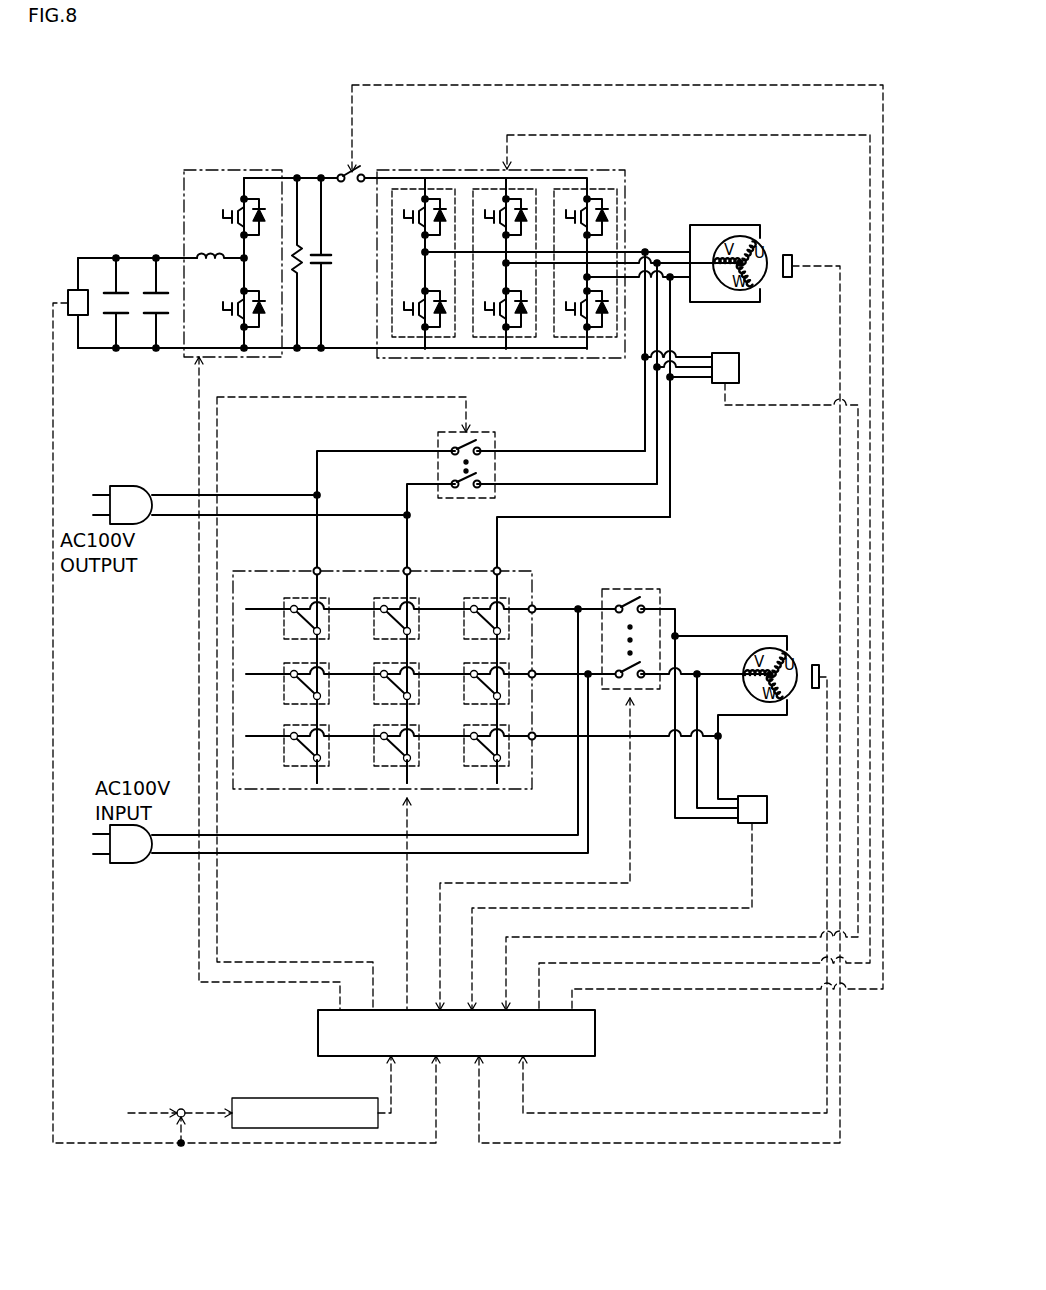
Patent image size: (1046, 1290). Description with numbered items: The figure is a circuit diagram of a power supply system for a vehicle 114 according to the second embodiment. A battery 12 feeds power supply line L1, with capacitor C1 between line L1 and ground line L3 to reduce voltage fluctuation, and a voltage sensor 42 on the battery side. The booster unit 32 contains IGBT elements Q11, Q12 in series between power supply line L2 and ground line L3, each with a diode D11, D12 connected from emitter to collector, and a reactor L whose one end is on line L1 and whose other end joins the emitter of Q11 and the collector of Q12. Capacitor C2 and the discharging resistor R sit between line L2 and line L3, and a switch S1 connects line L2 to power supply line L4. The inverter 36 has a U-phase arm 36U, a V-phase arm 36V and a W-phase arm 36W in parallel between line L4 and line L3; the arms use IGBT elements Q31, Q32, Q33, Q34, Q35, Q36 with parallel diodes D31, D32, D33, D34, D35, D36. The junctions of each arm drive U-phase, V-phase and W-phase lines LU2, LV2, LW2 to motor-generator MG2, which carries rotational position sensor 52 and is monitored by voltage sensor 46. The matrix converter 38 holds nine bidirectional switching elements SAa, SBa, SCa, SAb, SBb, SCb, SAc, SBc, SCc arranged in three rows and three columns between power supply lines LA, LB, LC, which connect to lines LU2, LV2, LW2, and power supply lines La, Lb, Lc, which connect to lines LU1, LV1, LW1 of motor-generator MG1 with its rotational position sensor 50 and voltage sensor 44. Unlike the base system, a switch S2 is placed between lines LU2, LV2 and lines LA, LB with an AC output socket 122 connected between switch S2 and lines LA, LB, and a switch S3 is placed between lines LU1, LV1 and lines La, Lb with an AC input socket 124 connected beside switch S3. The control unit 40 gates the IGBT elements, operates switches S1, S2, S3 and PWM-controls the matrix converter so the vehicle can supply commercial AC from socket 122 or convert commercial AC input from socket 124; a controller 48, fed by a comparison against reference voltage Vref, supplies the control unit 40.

The power supply system for a vehicle 114 is at (222, 73).
The booster unit 32 is at (184, 181).
The IGBT element Q11 is at (233, 203).
The diode D11 is at (262, 205).
The IGBT element Q12 is at (238, 332).
The diode D12 is at (263, 330).
The reactor L is at (207, 256).
The power supply line L1 is at (137, 257).
The power supply line L2 is at (299, 175).
The ground line L3 is at (327, 351).
The power supply line L4 is at (366, 172).
The resistor R is at (292, 256).
The capacitor C2 is at (324, 272).
The capacitor C1 is at (153, 322).
The battery 12 is at (113, 322).
The voltage sensor 42 is at (72, 290).
The switch S1 is at (349, 186).
The inverter 36 is at (628, 185).
The U-phase arm 36U is at (443, 186).
The V-phase arm 36V is at (521, 186).
The W-phase arm 36W is at (598, 186).
The IGBT element Q31 is at (415, 200).
The IGBT element Q32 is at (418, 335).
The IGBT element Q33 is at (496, 200).
The IGBT element Q34 is at (498, 335).
The IGBT element Q35 is at (577, 200).
The IGBT element Q36 is at (579, 335).
The diode D31 is at (440, 227).
The diode D32 is at (440, 316).
The diode D33 is at (520, 227).
The diode D34 is at (520, 316).
The diode D35 is at (604, 202).
The diode D36 is at (605, 330).
The U-phase line LU2 is at (652, 250).
The V-phase line LV2 is at (703, 266).
The W-phase line LW2 is at (680, 276).
The motor-generator MG2 is at (725, 237).
The rotational position sensor 52 is at (787, 278).
The voltage sensor 46 is at (742, 370).
The switch S2 is at (451, 431).
The output socket 122 is at (136, 485).
The voltage VA is at (384, 617).
The voltage VB is at (429, 633).
The voltage VC is at (565, 650).
The matrix converter 38 is at (534, 581).
The bidirectional switching element SAa is at (291, 604).
The bidirectional switching element SBa is at (381, 604).
The bidirectional switching element SCa is at (471, 604).
The bidirectional switching element SAb is at (291, 669).
The bidirectional switching element SBb is at (381, 669).
The bidirectional switching element SCb is at (471, 669).
The bidirectional switching element SAc is at (291, 731).
The bidirectional switching element SBc is at (381, 731).
The bidirectional switching element SCc is at (471, 731).
The power supply line La is at (537, 612).
The power supply line Lb is at (537, 677).
The power supply line Lc is at (537, 739).
The power supply line LA is at (320, 786).
The power supply line LB is at (418, 786).
The power supply line LC is at (508, 786).
The input socket 124 is at (138, 866).
The switch S3 is at (623, 588).
The U-phase line LU1 is at (720, 635).
The V-phase line LV1 is at (695, 670).
The W-phase line LW1 is at (720, 760).
The motor-generator MG1 is at (753, 648).
The rotational position sensor 50 is at (816, 690).
The voltage sensor 44 is at (768, 811).
The control unit 40 is at (598, 1037).
The controller 48 is at (327, 1131).
The reference voltage Vref is at (157, 1118).